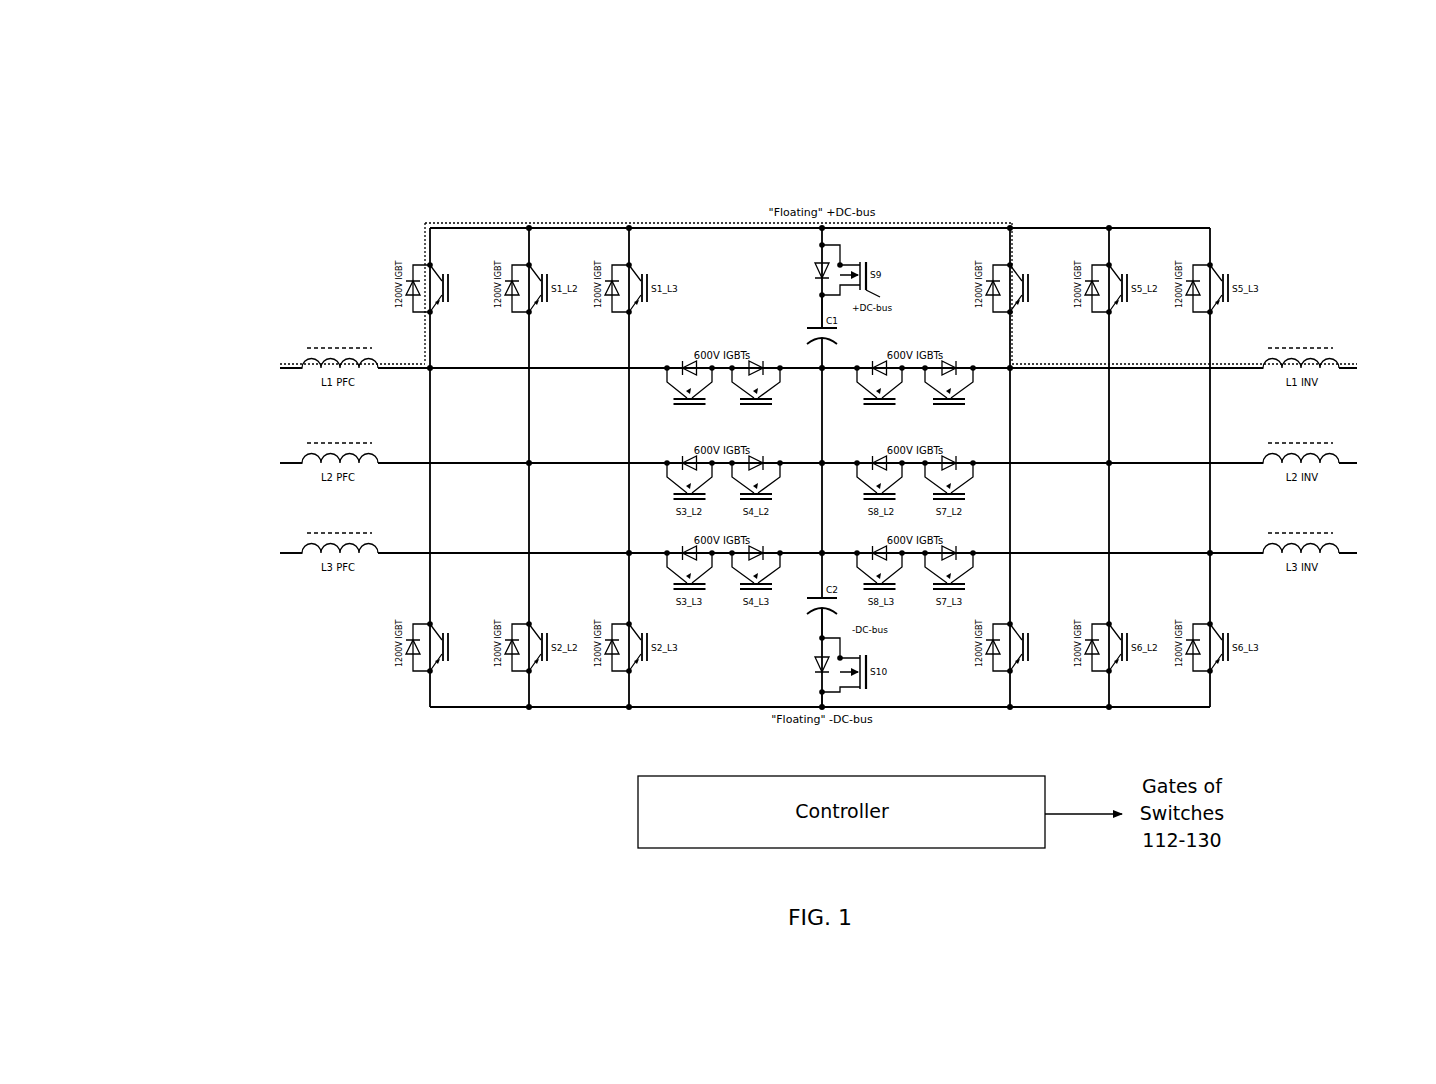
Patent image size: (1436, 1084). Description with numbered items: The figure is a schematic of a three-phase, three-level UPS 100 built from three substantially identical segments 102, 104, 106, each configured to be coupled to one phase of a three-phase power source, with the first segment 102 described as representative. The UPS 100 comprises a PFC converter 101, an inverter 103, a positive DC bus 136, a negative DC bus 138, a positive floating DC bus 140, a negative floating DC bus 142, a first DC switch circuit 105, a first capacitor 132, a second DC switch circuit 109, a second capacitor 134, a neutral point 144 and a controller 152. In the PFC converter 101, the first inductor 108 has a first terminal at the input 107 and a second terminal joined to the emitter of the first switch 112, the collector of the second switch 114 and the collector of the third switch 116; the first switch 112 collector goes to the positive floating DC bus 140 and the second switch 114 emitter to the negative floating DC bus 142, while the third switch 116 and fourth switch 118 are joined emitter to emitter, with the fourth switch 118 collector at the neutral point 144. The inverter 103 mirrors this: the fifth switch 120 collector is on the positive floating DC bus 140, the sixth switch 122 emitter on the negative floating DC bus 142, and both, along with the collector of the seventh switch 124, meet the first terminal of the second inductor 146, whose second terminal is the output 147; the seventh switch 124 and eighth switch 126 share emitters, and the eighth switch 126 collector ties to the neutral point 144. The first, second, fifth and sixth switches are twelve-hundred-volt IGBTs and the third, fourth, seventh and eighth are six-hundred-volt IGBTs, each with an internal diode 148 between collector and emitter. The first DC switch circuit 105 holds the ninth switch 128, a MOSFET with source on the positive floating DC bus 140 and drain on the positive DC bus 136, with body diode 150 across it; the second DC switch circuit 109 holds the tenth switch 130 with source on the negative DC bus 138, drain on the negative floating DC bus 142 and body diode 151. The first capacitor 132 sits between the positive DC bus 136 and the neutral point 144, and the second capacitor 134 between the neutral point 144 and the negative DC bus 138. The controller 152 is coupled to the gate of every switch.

The UPS 100 is at (338, 158).
The PFC converter 101 is at (520, 729).
The first segment 102 is at (262, 362).
The inverter 103 is at (1147, 205).
The second segment 104 is at (262, 463).
The first DC switch circuit 105 is at (886, 292).
The third segment 106 is at (262, 553).
The input 107 is at (290, 372).
The first inductor 108 is at (346, 350).
The second DC switch circuit 109 is at (884, 658).
The first switch 112 is at (448, 283).
The second switch 114 is at (450, 640).
The third switch 116 is at (680, 405).
The fourth switch 118 is at (770, 405).
The fifth switch 120 is at (1030, 283).
The sixth switch 122 is at (1030, 640).
The seventh switch 124 is at (962, 405).
The eighth switch 126 is at (882, 405).
The ninth switch 128 is at (868, 278).
The tenth switch 130 is at (870, 678).
The first capacitor 132 is at (818, 337).
The second capacitor 134 is at (822, 598).
The positive DC bus 136 is at (820, 310).
The negative DC bus 138 is at (822, 628).
The positive floating DC bus 140 is at (752, 232).
The negative floating DC bus 142 is at (712, 706).
The neutral point 144 is at (822, 372).
The second inductor 146 is at (1303, 350).
The output 147 is at (1352, 372).
The internal diode 148 is at (418, 298).
The body diode 150 is at (820, 270).
The body diode 151 is at (818, 667).
The controller 152 is at (990, 798).